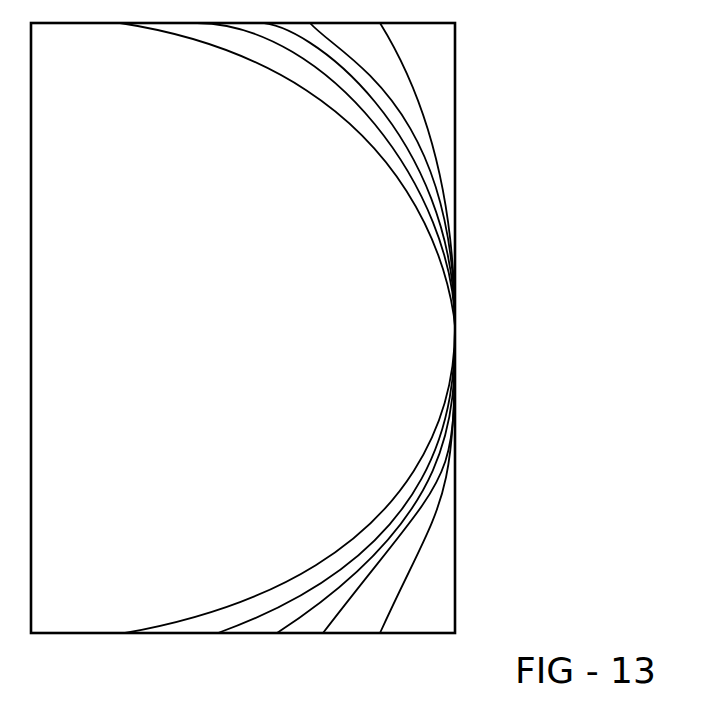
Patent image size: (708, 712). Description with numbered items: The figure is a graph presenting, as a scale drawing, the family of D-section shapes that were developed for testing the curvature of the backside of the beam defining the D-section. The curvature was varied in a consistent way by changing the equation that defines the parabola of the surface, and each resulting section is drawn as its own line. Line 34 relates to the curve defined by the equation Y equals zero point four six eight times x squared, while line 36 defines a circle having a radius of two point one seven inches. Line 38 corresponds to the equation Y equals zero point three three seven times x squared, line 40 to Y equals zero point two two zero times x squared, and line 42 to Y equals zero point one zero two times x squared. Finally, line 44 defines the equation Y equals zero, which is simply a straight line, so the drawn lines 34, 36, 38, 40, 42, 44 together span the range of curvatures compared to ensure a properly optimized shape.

The line 34 is at (255, 66).
The line 36 is at (304, 60).
The line 38 is at (410, 150).
The line 40 is at (432, 470).
The line 42 is at (425, 544).
The line 44 is at (457, 596).